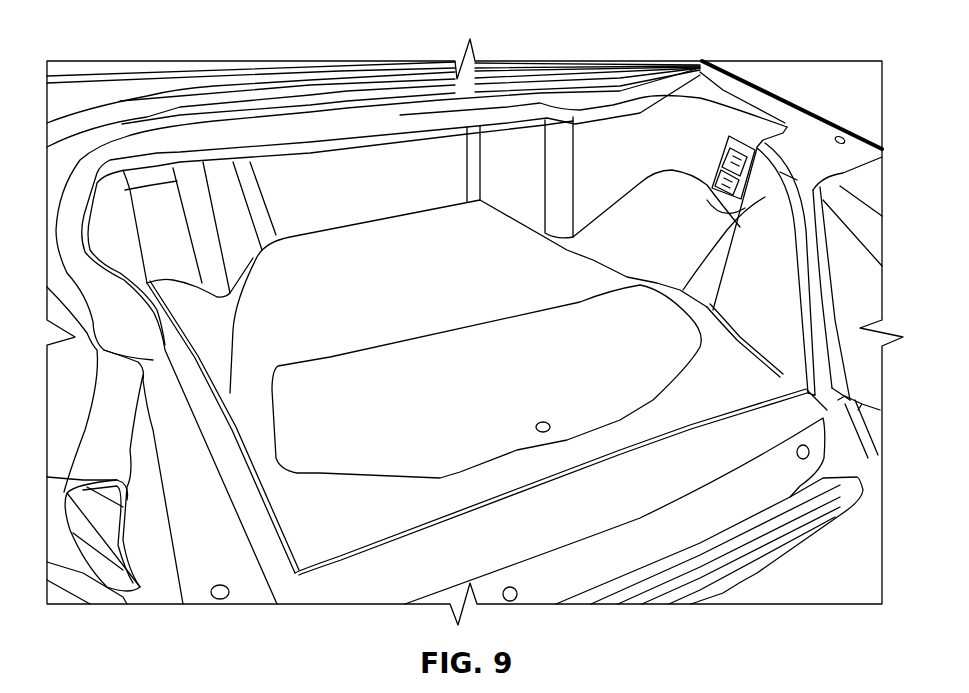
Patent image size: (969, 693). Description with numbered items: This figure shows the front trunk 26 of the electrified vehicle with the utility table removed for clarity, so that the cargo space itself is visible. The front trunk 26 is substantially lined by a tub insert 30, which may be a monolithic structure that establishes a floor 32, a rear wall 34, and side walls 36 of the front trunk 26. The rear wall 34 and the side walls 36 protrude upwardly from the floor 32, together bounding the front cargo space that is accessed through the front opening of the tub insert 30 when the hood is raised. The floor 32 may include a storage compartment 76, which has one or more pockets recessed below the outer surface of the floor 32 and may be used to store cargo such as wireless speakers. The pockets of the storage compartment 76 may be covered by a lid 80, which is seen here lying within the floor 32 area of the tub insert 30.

The front trunk 26 is at (627, 142).
The tub insert 30 is at (531, 176).
The floor 32 is at (373, 281).
The rear wall 34 is at (353, 184).
The side walls 36 is at (768, 222).
The storage compartment 76 is at (521, 305).
The lid 80 is at (470, 362).